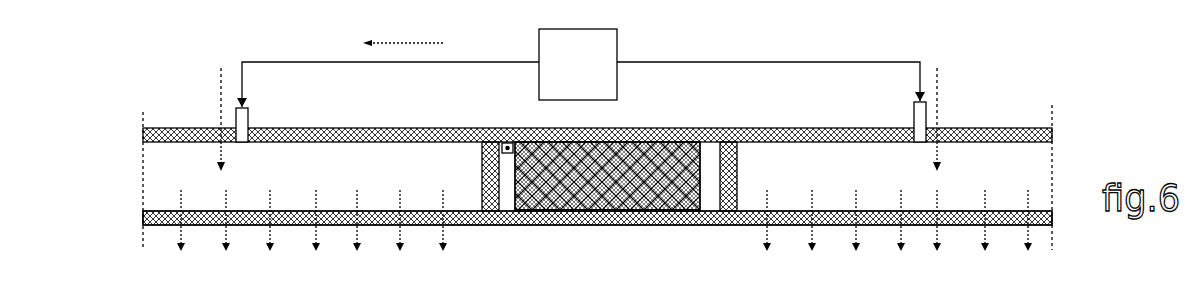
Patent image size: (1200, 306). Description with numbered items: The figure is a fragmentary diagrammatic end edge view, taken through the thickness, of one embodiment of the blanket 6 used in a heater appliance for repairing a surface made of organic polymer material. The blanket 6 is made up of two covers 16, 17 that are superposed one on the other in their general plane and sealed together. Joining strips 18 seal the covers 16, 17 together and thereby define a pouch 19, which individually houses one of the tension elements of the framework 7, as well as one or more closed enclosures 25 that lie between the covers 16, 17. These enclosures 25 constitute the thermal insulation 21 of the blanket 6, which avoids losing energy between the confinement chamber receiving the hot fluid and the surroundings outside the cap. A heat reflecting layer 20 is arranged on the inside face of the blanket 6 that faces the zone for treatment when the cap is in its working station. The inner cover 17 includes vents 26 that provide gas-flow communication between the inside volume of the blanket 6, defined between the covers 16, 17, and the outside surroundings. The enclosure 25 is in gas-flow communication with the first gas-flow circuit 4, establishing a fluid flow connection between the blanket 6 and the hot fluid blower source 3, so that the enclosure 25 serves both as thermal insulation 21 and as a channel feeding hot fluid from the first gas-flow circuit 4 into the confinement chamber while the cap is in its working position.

The blower source 3 is at (584, 74).
The first gas-flow circuit 4 is at (712, 61).
The blanket 6 is at (1038, 98).
The framework 7 is at (512, 198).
The cover 16 is at (334, 129).
The inner cover 17 is at (253, 228).
The joining strips 18 is at (484, 197).
The pouch 19 is at (512, 143).
The heat reflecting layer 20 is at (597, 250).
The thermal insulation 21 is at (784, 160).
The closed enclosure 25 is at (185, 179).
The vents 26 is at (344, 211).